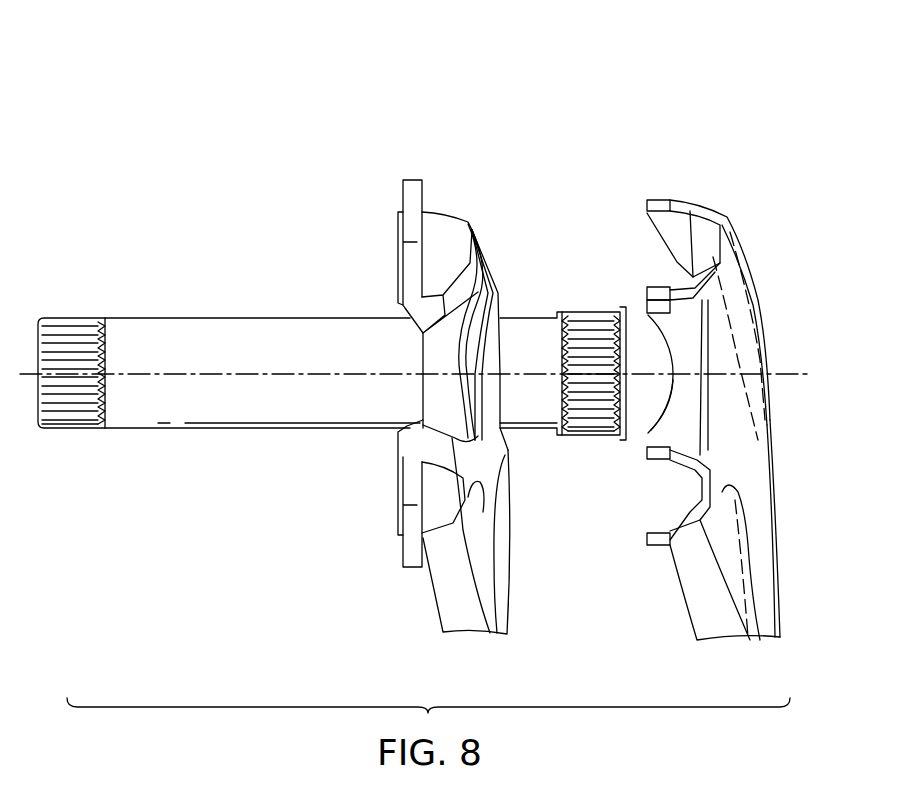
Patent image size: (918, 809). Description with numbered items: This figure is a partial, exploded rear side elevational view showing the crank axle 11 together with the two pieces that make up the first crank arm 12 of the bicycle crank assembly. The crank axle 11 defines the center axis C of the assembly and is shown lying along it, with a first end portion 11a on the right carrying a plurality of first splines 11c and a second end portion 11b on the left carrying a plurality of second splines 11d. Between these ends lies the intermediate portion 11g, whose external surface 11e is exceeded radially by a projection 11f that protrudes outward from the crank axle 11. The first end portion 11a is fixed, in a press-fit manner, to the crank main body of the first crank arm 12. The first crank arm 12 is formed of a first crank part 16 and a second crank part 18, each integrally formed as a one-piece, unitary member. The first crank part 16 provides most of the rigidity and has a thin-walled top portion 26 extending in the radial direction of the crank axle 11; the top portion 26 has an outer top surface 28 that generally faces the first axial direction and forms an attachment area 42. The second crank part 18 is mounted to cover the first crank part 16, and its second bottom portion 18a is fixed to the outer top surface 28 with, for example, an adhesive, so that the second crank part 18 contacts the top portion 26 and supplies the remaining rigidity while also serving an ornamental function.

The crank axle 11 is at (243, 300).
The first end portion 11a is at (583, 302).
The second end portion 11b is at (68, 303).
The first splines 11c is at (588, 440).
The second splines 11d is at (70, 432).
The external surface 11e is at (286, 430).
The projection 11f is at (628, 306).
The intermediate portion 11g is at (200, 430).
The first crank arm 12 is at (534, 80).
The first crank part 16 is at (452, 183).
The second crank part 18 is at (696, 183).
The second bottom portion 18a is at (776, 502).
The top portion 26 is at (503, 286).
The outer top surface 28 is at (480, 267).
The attachment area 42 is at (497, 268).
The center axis C is at (774, 372).